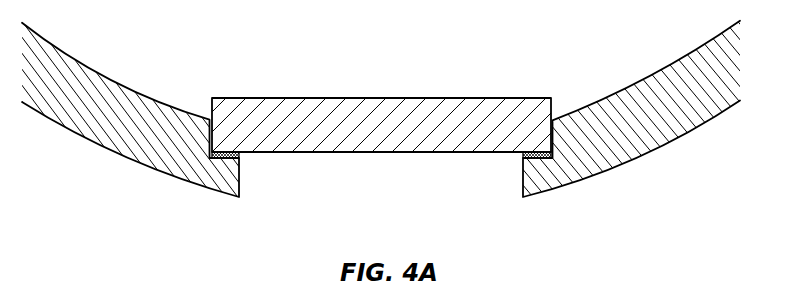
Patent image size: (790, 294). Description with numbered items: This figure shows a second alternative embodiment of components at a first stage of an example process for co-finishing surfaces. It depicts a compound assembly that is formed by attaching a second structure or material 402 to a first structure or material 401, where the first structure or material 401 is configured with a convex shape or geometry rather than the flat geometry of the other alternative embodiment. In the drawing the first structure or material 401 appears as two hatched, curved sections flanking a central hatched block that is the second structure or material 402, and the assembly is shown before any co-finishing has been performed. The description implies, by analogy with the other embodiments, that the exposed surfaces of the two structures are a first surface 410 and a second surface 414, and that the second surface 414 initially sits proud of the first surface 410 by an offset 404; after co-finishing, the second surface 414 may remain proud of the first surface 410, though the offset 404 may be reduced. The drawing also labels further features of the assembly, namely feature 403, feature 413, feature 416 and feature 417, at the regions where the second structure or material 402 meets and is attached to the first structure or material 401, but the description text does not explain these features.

The first structure or material 401 is at (215, 190).
The second structure or material 402 is at (383, 156).
The gap 403 is at (295, 186).
The edge 404 is at (205, 119).
The outer surface 410 is at (140, 93).
The side wall 413 is at (241, 174).
The top surface 414 is at (381, 98).
The adhesive layer 416 is at (240, 155).
The joint 417 is at (208, 147).